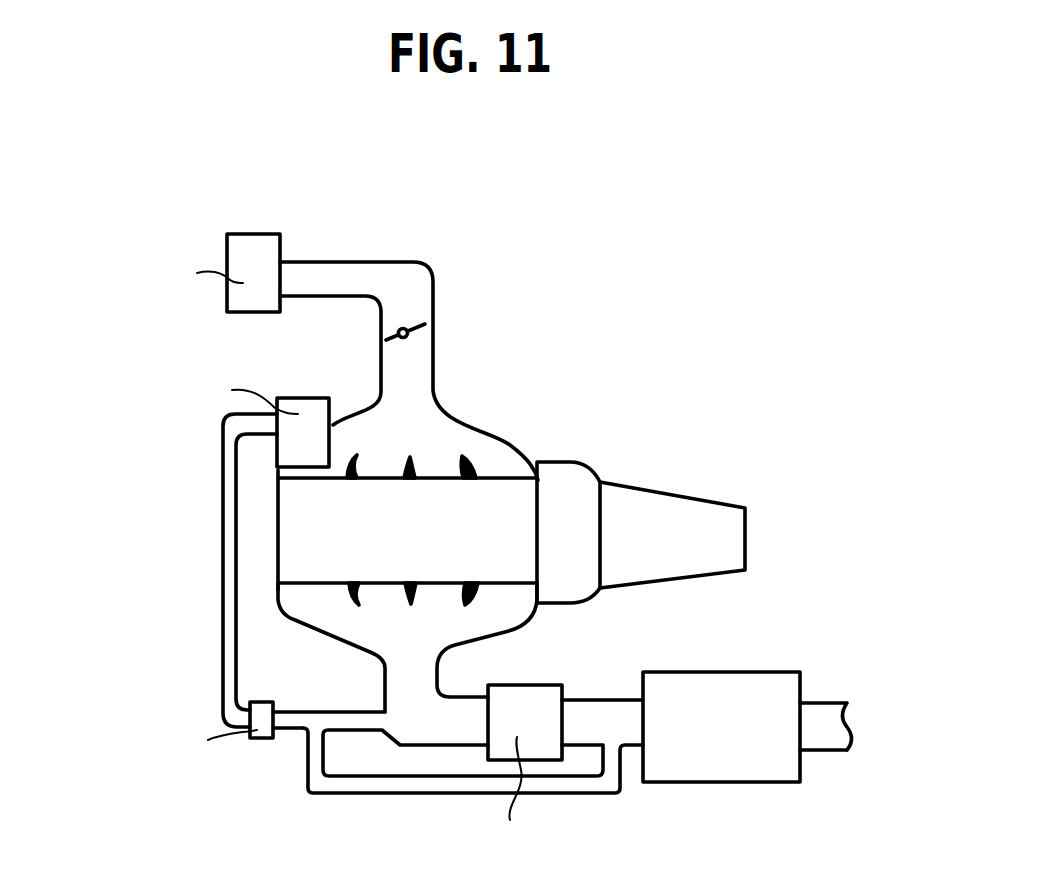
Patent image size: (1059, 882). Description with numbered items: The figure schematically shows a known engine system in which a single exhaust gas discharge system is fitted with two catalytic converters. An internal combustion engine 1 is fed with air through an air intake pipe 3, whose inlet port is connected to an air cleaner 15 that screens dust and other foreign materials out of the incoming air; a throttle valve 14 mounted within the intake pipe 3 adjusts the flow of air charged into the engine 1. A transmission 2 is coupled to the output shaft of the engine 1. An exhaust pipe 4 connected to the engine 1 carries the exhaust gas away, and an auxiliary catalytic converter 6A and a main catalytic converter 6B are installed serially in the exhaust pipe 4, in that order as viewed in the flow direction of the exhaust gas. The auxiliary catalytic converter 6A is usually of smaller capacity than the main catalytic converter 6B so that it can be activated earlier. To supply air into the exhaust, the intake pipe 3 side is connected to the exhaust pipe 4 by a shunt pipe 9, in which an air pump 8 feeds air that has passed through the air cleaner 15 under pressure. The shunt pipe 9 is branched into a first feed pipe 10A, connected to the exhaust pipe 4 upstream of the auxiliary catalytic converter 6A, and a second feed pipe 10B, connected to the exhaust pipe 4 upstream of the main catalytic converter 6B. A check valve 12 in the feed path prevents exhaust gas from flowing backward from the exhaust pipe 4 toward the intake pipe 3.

The internal combustion engine 1 is at (482, 493).
The transmission 2 is at (668, 503).
The air intake pipe 3 is at (418, 410).
The exhaust pipe 4 is at (593, 705).
The auxiliary catalytic converter 6A is at (520, 692).
The main catalytic converter 6B is at (717, 678).
The air pump 8 is at (300, 403).
The shunt pipe 9 is at (222, 560).
The first feed pipe 10A is at (295, 714).
The second feed pipe 10B is at (362, 784).
The check valve 12 is at (267, 740).
The throttle valve 14 is at (407, 327).
The air cleaner 15 is at (253, 238).